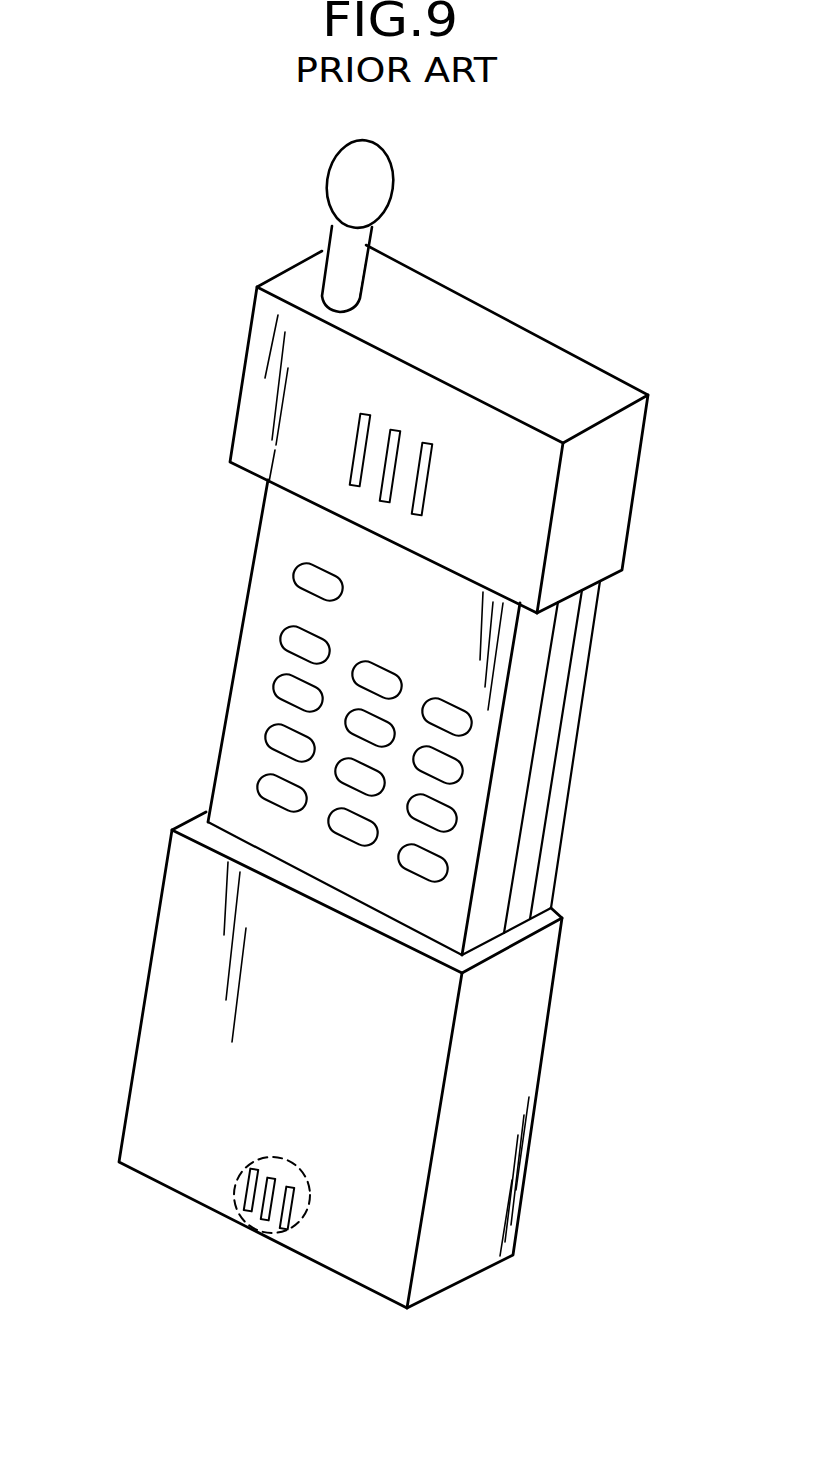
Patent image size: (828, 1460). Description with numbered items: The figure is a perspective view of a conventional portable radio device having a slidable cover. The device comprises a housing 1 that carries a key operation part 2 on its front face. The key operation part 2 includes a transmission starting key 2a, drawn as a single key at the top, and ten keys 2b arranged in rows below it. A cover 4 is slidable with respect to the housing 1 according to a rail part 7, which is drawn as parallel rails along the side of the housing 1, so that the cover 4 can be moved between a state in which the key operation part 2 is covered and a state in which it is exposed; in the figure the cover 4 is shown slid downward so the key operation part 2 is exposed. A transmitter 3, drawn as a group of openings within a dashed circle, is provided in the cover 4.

The housing 1 is at (618, 488).
The key operation part 2 is at (372, 702).
The transmission starting key 2a is at (306, 582).
The ten keys 2b is at (225, 635).
The transmitter 3 is at (260, 1235).
The cover 4 is at (503, 1088).
The rail part 7 is at (545, 757).